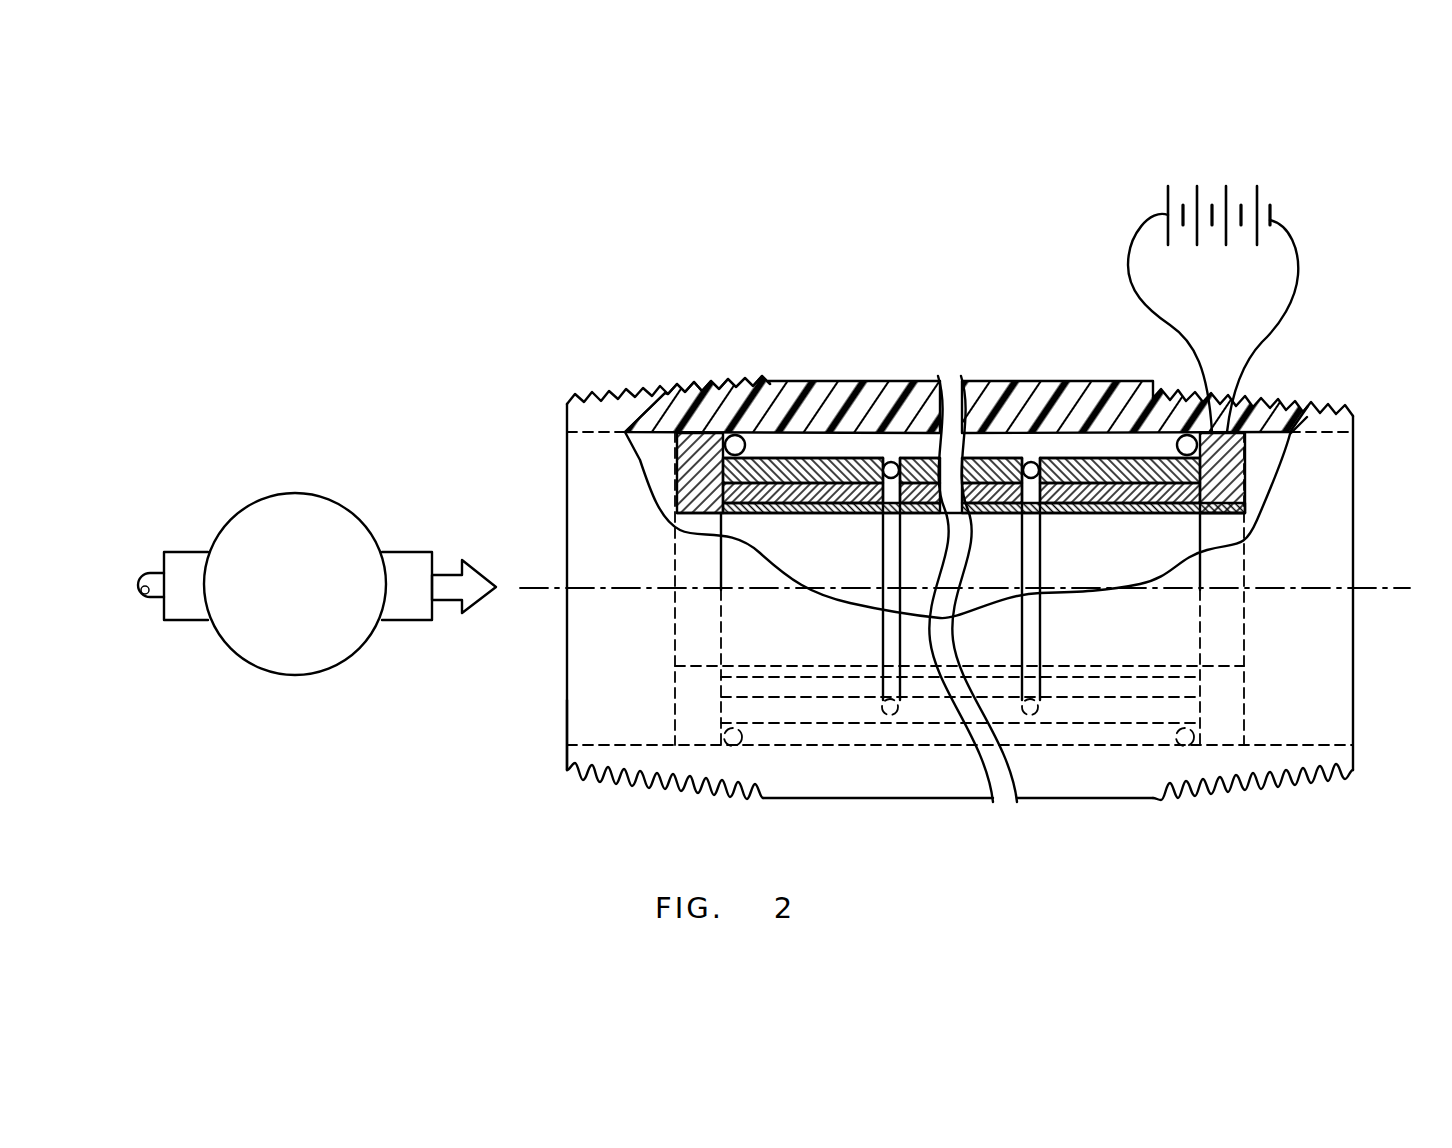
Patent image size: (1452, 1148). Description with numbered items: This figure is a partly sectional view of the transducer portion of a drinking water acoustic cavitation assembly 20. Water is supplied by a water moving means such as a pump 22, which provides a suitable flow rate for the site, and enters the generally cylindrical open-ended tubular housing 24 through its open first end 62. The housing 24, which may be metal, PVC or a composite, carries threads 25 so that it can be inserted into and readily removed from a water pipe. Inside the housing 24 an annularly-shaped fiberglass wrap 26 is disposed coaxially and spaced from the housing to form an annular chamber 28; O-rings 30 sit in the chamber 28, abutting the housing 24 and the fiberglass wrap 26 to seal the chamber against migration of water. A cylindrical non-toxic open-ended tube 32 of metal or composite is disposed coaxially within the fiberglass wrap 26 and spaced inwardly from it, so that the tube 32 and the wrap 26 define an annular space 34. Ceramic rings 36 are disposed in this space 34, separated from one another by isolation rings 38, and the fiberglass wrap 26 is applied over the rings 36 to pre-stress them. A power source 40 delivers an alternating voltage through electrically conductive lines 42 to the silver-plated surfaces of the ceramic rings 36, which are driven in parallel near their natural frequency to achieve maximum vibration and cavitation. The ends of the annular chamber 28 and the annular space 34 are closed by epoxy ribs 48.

The drinking water acoustic cavitation assembly 20 is at (378, 300).
The pump 22 is at (326, 487).
The tubular housing 24 is at (848, 382).
The threads 25 is at (622, 410).
The fiberglass wrap 26 is at (803, 460).
The annular chamber 28 is at (1100, 503).
The O-rings 30 is at (728, 437).
The non-toxic tube 32 is at (1137, 517).
The annular space 34 is at (1190, 487).
The ceramic rings 36 is at (760, 517).
The isolation rings 38 is at (891, 463).
The power source 40 is at (1284, 160).
The electrically conductive lines 42 is at (1128, 258).
The epoxy ribs 48 is at (675, 668).
The open first end 62 is at (567, 708).